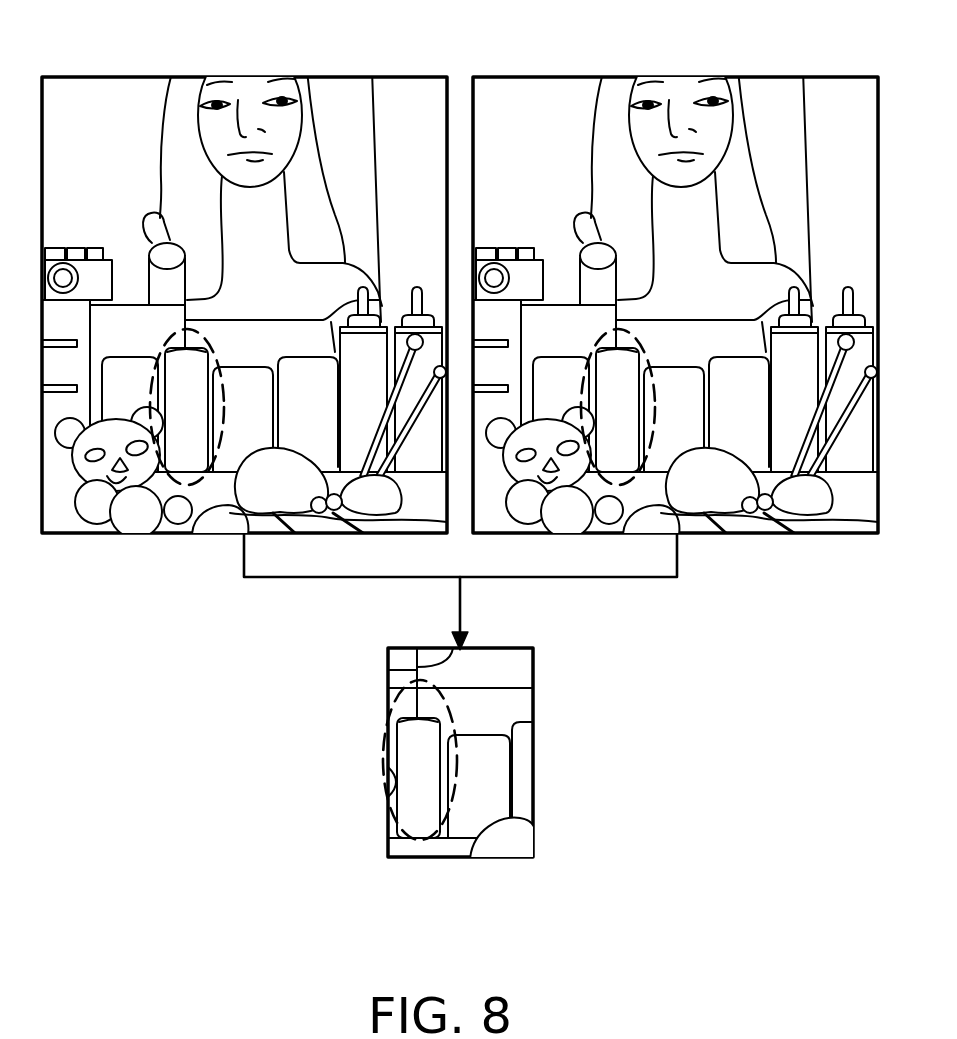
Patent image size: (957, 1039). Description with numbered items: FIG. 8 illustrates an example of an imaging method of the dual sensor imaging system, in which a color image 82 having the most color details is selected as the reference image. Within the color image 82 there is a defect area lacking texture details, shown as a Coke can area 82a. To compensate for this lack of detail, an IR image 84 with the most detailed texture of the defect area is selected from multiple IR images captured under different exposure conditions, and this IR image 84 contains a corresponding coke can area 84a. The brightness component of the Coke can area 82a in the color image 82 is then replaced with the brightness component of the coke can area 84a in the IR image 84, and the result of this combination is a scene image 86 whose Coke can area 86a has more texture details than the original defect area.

The color image 82 is at (390, 76).
The Coke can area 82a is at (162, 473).
The IR image 84 is at (821, 76).
The coke can area 84a is at (653, 433).
The scene image 86 is at (495, 648).
The Coke can area 86a is at (400, 690).